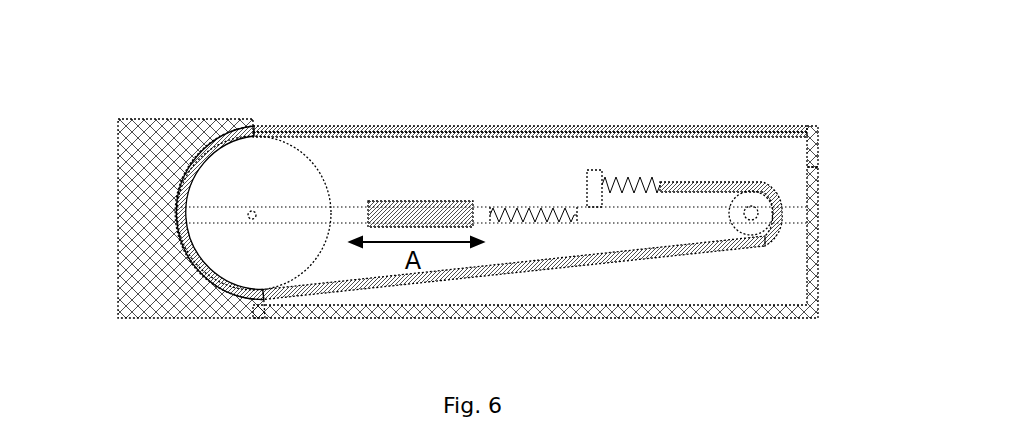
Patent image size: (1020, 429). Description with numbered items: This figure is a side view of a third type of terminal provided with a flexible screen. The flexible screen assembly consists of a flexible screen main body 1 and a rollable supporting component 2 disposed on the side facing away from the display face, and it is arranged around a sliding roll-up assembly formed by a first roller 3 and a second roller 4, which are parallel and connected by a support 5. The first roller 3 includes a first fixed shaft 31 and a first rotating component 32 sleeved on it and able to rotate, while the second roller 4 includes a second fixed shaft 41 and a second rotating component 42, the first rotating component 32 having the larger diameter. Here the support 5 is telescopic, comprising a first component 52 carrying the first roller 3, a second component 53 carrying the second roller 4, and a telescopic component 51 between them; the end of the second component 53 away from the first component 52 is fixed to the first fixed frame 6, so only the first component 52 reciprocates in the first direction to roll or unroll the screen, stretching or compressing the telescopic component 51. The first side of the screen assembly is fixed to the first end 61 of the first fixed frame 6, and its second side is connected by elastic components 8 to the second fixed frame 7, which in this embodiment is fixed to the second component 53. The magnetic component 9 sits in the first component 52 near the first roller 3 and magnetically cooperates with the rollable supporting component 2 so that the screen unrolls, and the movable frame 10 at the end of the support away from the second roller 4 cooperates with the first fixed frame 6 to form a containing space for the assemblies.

The flexible screen main body 1 is at (695, 130).
The rollable supporting component 2 is at (740, 135).
The first roller 3 is at (176, 213).
The first fixed shaft 31 is at (252, 212).
The first rotating component 32 is at (192, 191).
The second roller 4 is at (791, 215).
The second fixed shaft 41 is at (752, 213).
The second rotating component 42 is at (767, 203).
The support 5 is at (529, 127).
The telescopic component 51 is at (528, 218).
The first component 52 is at (489, 218).
The second component 53 is at (573, 217).
The first fixed frame 6 is at (810, 268).
The first end 61 is at (818, 127).
The second fixed frame 7 is at (592, 172).
The elastic components 8 is at (627, 178).
The magnetic component 9 is at (422, 210).
The movable frame 10 is at (163, 155).